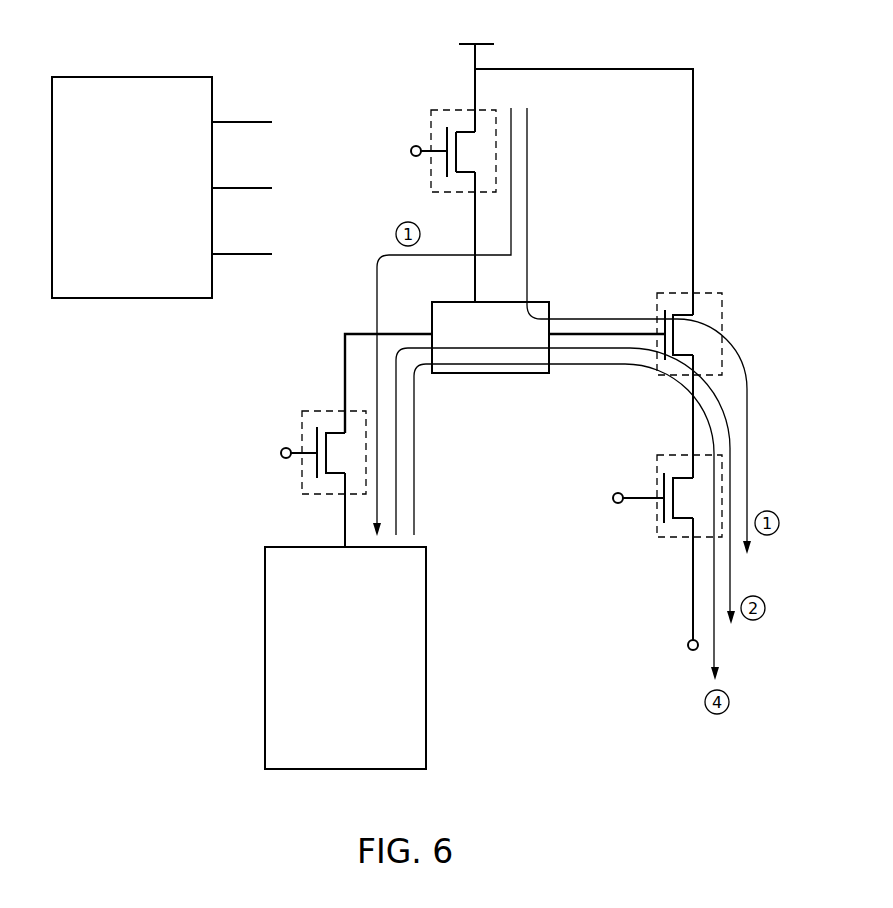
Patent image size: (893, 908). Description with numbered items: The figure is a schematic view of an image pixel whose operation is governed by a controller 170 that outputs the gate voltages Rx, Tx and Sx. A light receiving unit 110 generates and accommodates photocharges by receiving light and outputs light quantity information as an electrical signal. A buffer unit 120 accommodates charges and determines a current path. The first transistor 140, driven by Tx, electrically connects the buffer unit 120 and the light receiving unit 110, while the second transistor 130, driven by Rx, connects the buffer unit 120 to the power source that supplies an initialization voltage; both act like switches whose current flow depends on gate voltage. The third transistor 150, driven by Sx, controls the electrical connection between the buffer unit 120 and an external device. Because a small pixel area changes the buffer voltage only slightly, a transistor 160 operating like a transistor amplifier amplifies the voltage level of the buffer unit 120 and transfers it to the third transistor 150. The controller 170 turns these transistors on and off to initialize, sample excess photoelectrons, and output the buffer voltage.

The light receiving unit 110 is at (427, 657).
The buffer unit 120 is at (480, 373).
The second transistor 130 is at (431, 124).
The first transistor 140 is at (302, 423).
The third transistor 150 is at (657, 470).
The transistor 160 is at (657, 303).
The controller 170 is at (113, 77).